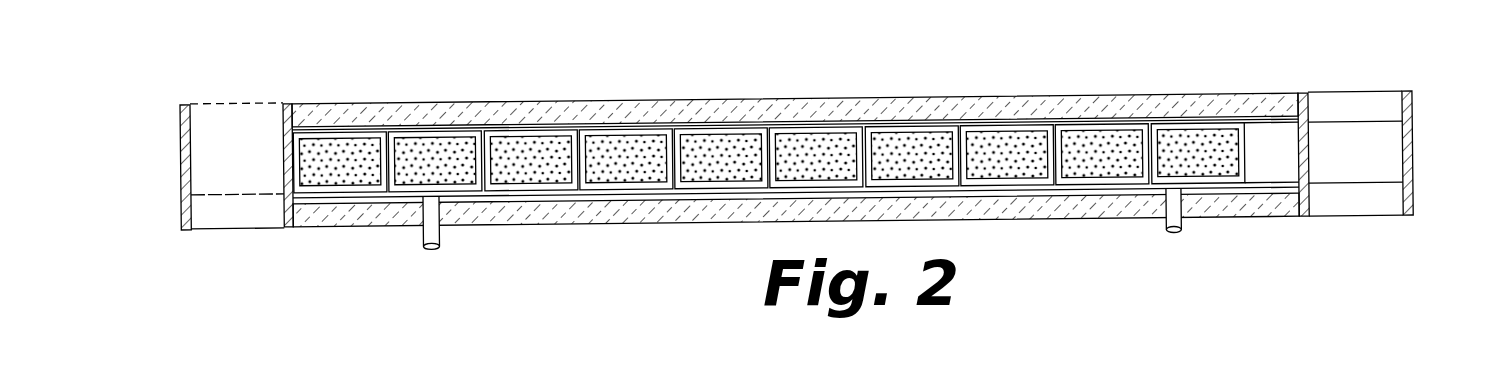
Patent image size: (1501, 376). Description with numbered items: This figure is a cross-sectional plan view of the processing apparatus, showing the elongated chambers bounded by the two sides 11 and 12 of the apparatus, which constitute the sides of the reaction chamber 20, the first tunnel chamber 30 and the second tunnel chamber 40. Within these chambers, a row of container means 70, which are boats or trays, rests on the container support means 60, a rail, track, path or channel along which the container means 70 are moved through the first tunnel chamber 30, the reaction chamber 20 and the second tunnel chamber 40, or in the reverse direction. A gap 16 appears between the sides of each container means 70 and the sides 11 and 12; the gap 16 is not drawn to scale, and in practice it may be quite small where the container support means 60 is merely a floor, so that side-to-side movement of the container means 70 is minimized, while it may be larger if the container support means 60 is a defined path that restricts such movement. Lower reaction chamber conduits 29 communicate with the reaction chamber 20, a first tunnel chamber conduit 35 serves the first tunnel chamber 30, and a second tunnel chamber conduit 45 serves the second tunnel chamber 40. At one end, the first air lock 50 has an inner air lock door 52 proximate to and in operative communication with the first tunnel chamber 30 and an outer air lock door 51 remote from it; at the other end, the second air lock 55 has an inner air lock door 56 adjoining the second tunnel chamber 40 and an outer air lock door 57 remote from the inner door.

The side of apparatus 11 is at (635, 107).
The side of apparatus 12 is at (613, 212).
The gap 16 is at (592, 127).
The reaction chamber 20 is at (822, 123).
The lower reaction chamber conduit 29 is at (721, 153).
The first tunnel chamber 30 is at (488, 128).
The first tunnel chamber conduit 35 is at (422, 235).
The second tunnel chamber 40 is at (1068, 122).
The second tunnel chamber conduit 45 is at (1180, 225).
The first air lock 50 is at (210, 112).
The outer air lock door 51 is at (178, 137).
The inner air lock door 52 is at (284, 118).
The second air lock 55 is at (1355, 102).
The inner air lock door 56 is at (1308, 107).
The outer air lock door 57 is at (1413, 108).
The container support means 60 is at (247, 188).
The container means 70 is at (408, 137).